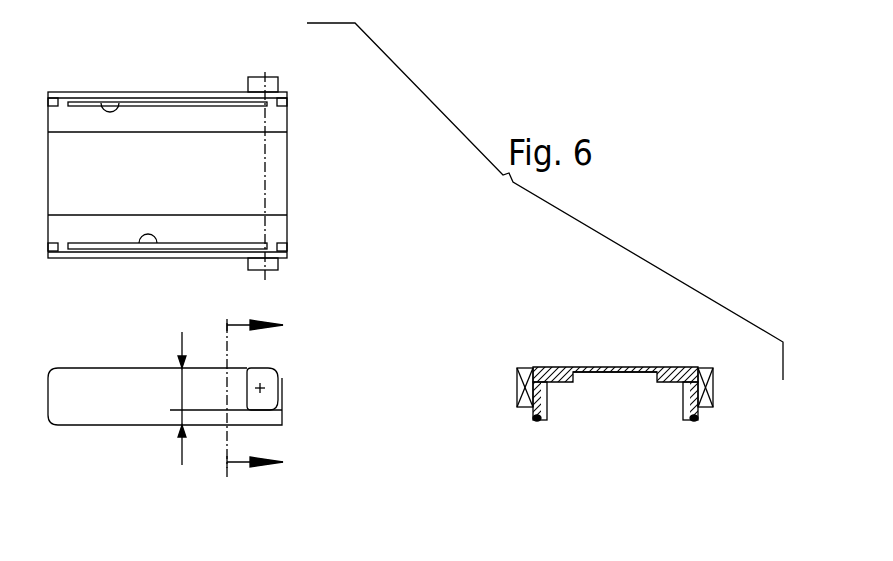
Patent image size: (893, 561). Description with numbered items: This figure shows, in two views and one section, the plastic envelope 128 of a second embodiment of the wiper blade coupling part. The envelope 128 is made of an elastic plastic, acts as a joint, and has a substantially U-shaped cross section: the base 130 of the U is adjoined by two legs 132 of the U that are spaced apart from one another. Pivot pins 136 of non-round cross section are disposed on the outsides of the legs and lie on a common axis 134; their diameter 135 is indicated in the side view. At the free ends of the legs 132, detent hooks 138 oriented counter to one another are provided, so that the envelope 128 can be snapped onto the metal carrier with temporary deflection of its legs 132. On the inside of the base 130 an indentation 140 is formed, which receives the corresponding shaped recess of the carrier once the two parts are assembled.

The envelope 128 is at (217, 90).
The base of the U of the envelope 130 is at (278, 121).
The legs of the U of the envelope 132 is at (176, 94).
The common axis 134 is at (266, 279).
The diameter of the pivot pins 135 is at (182, 390).
The pivot pins 136 is at (272, 80).
The detent hooks 138 is at (110, 102).
The indentation 140 is at (276, 180).